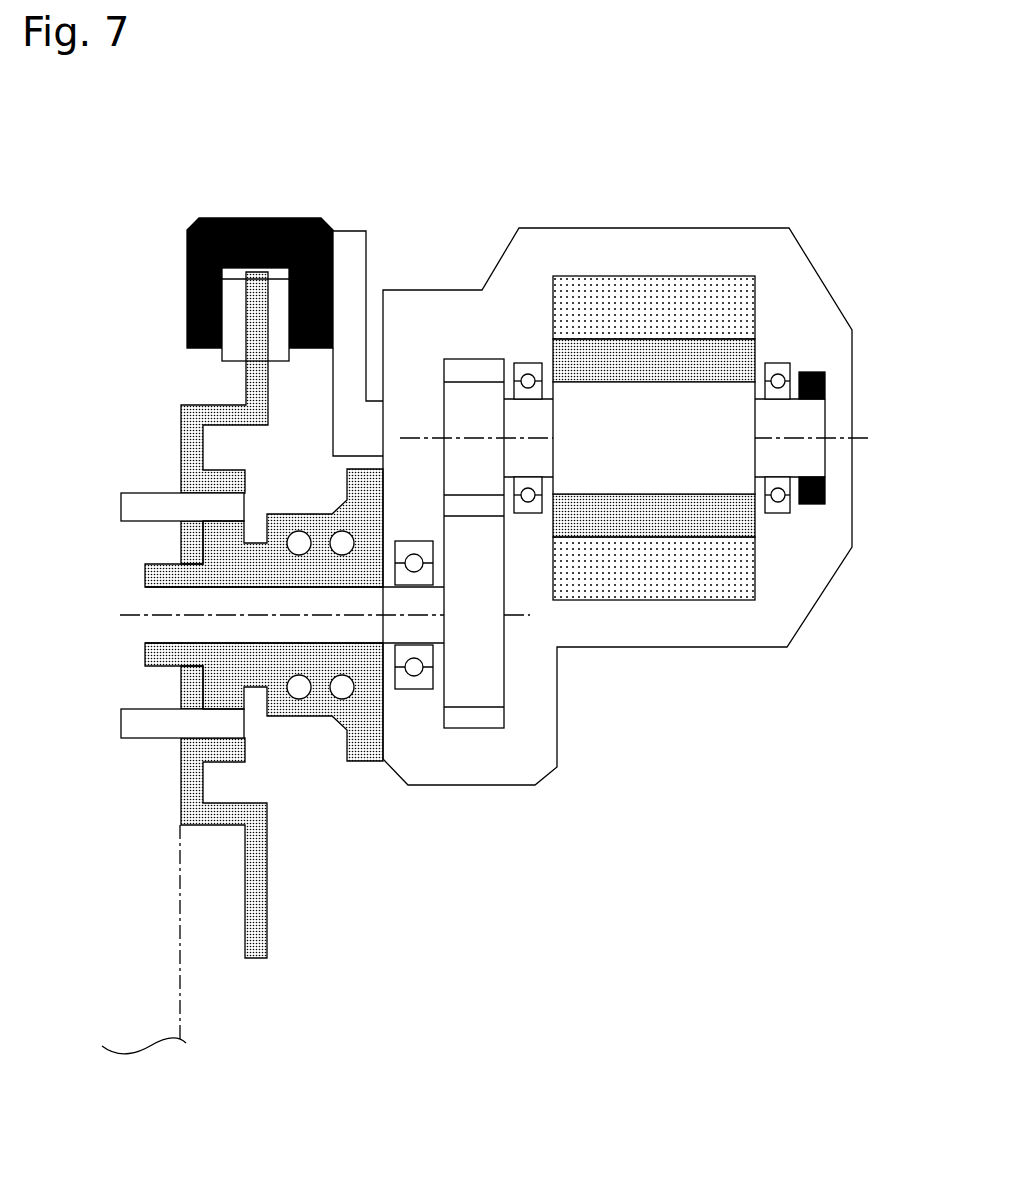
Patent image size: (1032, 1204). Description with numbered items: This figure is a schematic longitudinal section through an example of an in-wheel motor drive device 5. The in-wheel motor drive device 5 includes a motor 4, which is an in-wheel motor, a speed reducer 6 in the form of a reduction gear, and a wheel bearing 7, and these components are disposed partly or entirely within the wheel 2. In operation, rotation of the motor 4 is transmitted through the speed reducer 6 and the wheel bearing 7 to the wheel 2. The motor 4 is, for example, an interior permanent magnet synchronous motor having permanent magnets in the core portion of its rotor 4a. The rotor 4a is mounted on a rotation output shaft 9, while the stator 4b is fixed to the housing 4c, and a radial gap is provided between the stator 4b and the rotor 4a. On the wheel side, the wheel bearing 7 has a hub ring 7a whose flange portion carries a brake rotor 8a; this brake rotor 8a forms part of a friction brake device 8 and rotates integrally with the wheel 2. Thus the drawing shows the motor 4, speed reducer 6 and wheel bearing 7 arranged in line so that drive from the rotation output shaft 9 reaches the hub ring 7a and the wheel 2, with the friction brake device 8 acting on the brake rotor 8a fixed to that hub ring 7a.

The wheel 2 is at (180, 973).
The motor 4 is at (656, 520).
The rotor 4a is at (738, 362).
The stator 4b is at (697, 308).
The housing 4c is at (798, 577).
The in-wheel motor drive device 5 is at (479, 549).
The speed reducer 6 is at (482, 732).
The wheel bearing 7 is at (280, 690).
The hub ring 7a is at (168, 570).
The friction brake device 8 is at (218, 213).
The brake rotor 8a is at (198, 430).
The rotation output shaft 9 is at (593, 400).